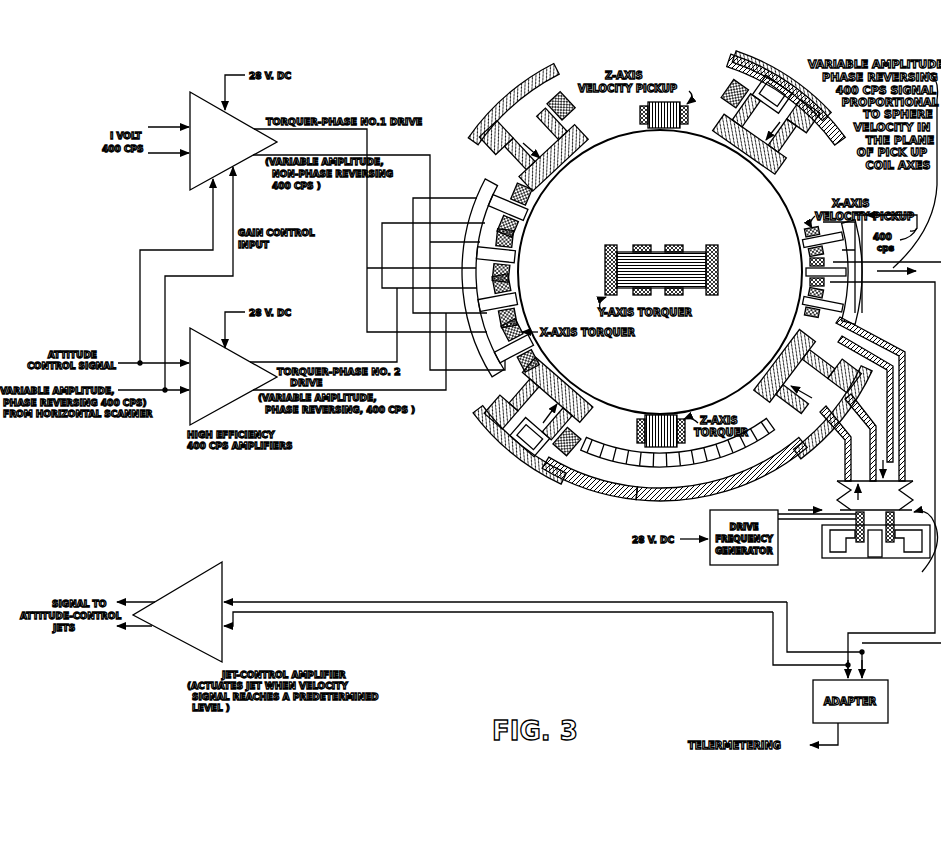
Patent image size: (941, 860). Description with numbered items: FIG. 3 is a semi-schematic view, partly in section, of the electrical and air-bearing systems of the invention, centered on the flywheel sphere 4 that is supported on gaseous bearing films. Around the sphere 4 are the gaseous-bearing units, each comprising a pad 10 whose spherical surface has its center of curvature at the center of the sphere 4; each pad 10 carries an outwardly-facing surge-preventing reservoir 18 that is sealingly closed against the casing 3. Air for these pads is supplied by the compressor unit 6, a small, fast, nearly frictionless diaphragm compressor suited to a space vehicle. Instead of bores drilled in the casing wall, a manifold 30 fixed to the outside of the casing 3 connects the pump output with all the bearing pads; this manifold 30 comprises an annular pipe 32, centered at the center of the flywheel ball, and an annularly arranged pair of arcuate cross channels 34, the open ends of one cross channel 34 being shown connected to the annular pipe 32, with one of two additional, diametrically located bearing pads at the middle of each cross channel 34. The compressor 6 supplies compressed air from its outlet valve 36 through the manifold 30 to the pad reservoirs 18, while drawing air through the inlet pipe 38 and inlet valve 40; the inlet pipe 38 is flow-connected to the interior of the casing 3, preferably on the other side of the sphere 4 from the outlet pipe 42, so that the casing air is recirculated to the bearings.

The casing 3 is at (563, 111).
The sphere 4 is at (669, 216).
The compressor unit 6 is at (858, 564).
The pad 10 is at (558, 128).
The reservoir 18 is at (548, 146).
The manifold 30 is at (580, 487).
The annular pipe 32 is at (826, 150).
The arcuate cross channel 34 is at (748, 76).
The outlet valve 36 is at (866, 490).
The inlet pipe 38 is at (907, 378).
The inlet valve 40 is at (905, 487).
The outlet pipe 42 is at (851, 458).